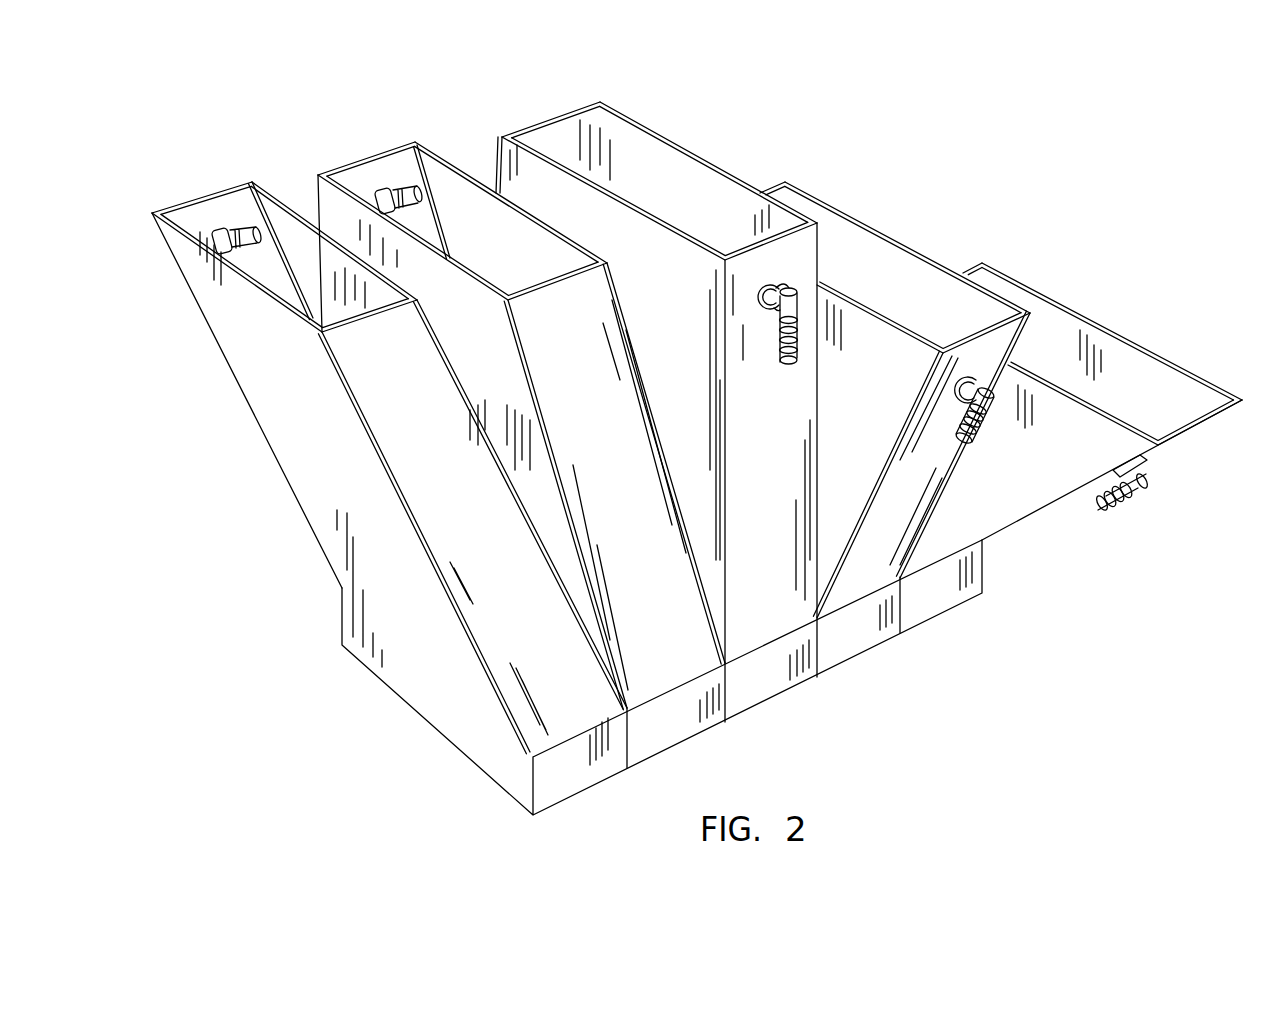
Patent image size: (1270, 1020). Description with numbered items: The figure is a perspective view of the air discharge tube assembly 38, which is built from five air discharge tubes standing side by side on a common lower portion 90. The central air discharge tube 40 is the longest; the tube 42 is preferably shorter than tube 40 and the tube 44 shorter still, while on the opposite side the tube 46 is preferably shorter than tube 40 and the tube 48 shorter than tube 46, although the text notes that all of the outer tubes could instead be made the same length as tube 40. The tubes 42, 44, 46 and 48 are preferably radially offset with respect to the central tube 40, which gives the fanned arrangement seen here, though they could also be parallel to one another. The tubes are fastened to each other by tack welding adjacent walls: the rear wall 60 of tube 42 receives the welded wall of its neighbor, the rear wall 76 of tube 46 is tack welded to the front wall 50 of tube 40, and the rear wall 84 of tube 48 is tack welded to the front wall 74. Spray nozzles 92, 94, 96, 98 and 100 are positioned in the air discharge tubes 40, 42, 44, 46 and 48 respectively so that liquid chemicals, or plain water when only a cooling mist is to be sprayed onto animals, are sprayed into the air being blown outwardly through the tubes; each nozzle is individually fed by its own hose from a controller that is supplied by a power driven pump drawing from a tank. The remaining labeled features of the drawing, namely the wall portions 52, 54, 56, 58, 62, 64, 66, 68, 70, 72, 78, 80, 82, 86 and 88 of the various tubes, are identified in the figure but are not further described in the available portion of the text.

The multi-compartment tank assembly 38 is at (826, 108).
The air discharge tube 40 is at (732, 192).
The air discharge tube 42 is at (456, 162).
The air discharge tube 44 is at (267, 188).
The air discharge tube 46 is at (912, 241).
The air discharge tube 48 is at (1133, 330).
The front wall 50 is at (662, 135).
The inner wall surface of central compartment 52 is at (560, 187).
The front wall of central compartment 54 is at (760, 420).
The left wall of central compartment 56 is at (500, 163).
The top edge of right wall of second compartment 58 is at (430, 150).
The rear wall 60 is at (475, 380).
The front wall of second compartment 62 is at (588, 418).
The rear top edge of second compartment 64 is at (367, 160).
The top edge of right wall of first compartment 66 is at (312, 220).
The left side wall of first compartment 68 is at (306, 466).
The front wall of first compartment 70 is at (413, 458).
The rear top edge of first compartment 72 is at (205, 198).
The front wall 74 is at (985, 286).
The rear wall 76 is at (858, 403).
The front wall of fourth compartment 78 is at (908, 488).
The rear top edge of fourth compartment 80 is at (775, 193).
The top edge of right wall of fifth compartment 82 is at (1190, 373).
The rear wall 84 is at (1028, 468).
The front wall of fifth compartment 86 is at (1210, 418).
The rear top edge of fifth compartment 88 is at (963, 273).
The base 90 is at (750, 715).
The spray nozzle 92 is at (752, 296).
The spray nozzle 94 is at (397, 186).
The spray nozzle 96 is at (236, 224).
The spray nozzle 98 is at (984, 413).
The spray nozzle 100 is at (1140, 499).